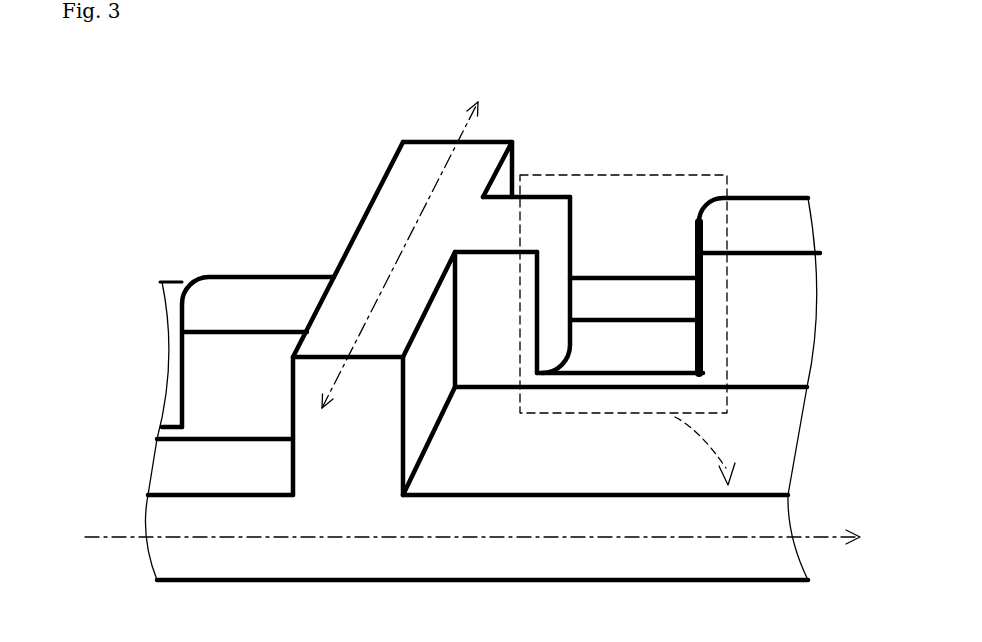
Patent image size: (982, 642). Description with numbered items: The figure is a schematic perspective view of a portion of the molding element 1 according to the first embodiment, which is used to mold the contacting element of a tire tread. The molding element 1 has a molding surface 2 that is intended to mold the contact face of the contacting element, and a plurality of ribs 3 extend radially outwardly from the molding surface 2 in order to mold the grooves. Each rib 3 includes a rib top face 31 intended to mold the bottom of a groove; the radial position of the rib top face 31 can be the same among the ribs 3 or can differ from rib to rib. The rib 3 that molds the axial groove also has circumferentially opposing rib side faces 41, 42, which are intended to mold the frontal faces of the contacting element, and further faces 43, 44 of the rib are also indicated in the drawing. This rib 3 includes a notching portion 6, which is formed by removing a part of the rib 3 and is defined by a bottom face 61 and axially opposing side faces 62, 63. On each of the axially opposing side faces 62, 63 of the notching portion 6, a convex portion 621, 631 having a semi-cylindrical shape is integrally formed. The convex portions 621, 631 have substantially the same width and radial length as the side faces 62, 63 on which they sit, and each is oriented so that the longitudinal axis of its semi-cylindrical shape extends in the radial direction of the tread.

The molding element 1 is at (226, 152).
The molding surface 2 is at (173, 298).
The rib 3 is at (520, 285).
The rib top face 31 is at (457, 234).
The rib side face 41 is at (263, 409).
The rib side face 42 is at (496, 207).
The side face of gate structure 43 is at (423, 397).
The slanted side face of gate structure 44 is at (373, 197).
The notching portion 6 is at (402, 272).
The bottom face 61 is at (172, 413).
The side face 62 is at (552, 293).
The side face 63 is at (703, 230).
The convex portion 621 is at (560, 226).
The convex portion 631 is at (717, 197).